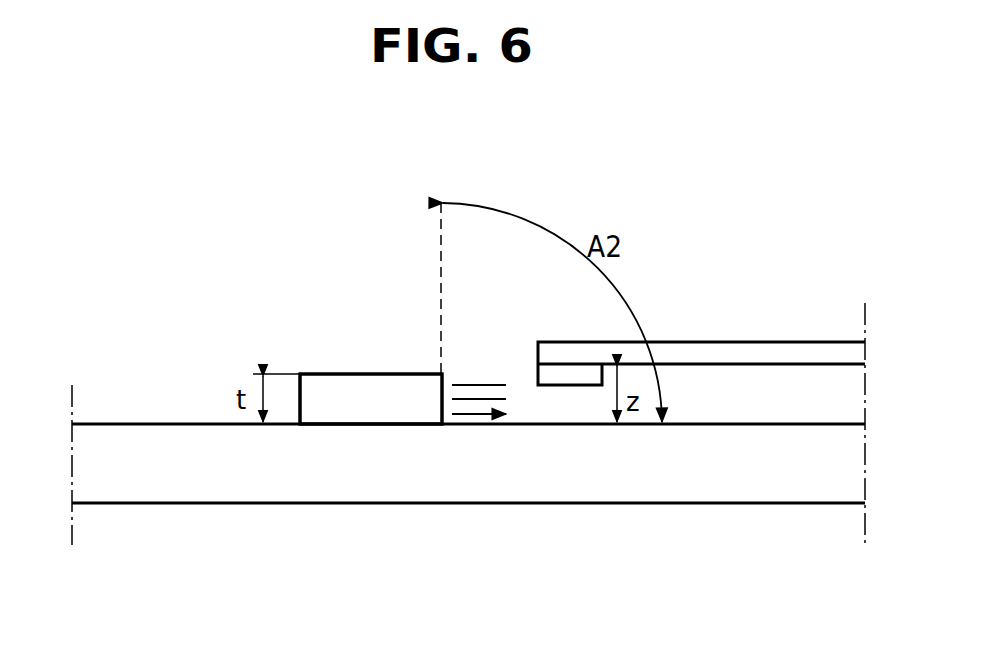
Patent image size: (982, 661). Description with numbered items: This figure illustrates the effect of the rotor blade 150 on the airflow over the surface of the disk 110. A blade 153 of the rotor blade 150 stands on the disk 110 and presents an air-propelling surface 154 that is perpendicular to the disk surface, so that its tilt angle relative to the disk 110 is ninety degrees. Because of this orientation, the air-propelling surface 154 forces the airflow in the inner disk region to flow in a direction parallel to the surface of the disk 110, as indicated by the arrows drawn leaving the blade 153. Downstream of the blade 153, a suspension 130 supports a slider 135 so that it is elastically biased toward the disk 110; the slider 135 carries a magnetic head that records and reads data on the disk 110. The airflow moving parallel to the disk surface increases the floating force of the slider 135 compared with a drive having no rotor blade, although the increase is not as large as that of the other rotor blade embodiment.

The disk 110 is at (748, 490).
The suspension 130 is at (700, 352).
The slider 135 is at (568, 378).
The rotor blade 150 is at (282, 352).
The blade 153 is at (363, 374).
The air-propelling surface 154 is at (442, 383).